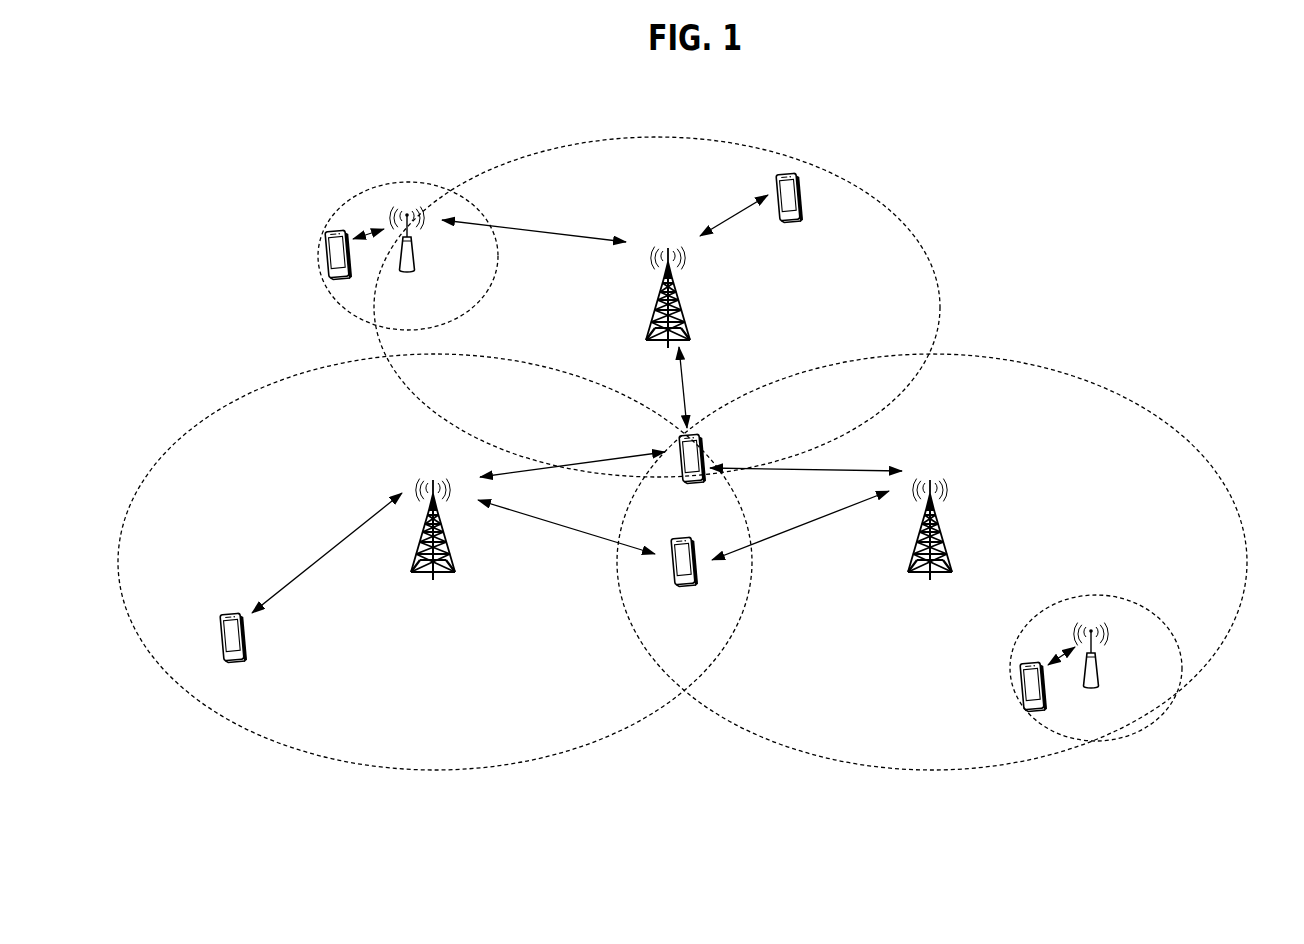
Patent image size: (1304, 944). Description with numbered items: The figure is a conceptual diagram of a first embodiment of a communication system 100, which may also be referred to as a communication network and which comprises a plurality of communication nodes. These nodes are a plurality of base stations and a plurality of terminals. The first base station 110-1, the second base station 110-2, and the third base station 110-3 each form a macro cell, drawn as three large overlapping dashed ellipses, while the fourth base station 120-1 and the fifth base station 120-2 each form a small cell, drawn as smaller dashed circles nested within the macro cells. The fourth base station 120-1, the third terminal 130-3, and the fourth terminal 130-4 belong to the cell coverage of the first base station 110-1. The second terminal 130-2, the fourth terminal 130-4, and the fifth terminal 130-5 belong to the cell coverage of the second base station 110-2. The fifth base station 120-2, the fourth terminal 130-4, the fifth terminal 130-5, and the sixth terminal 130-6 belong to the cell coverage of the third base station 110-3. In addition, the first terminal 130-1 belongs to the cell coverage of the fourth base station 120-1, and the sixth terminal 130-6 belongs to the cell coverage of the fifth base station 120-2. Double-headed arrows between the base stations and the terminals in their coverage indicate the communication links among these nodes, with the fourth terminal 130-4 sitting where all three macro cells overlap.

The communication system 100 is at (636, 108).
The first base station 110-1 is at (683, 290).
The second base station 110-2 is at (433, 580).
The third base station 110-3 is at (945, 528).
The fourth base station 120-1 is at (414, 258).
The fifth base station 120-2 is at (1103, 665).
The first terminal 130-1 is at (326, 253).
The second terminal 130-2 is at (244, 640).
The third terminal 130-3 is at (800, 200).
The fourth terminal 130-4 is at (704, 437).
The fifth terminal 130-5 is at (718, 510).
The sixth terminal 130-6 is at (1021, 683).